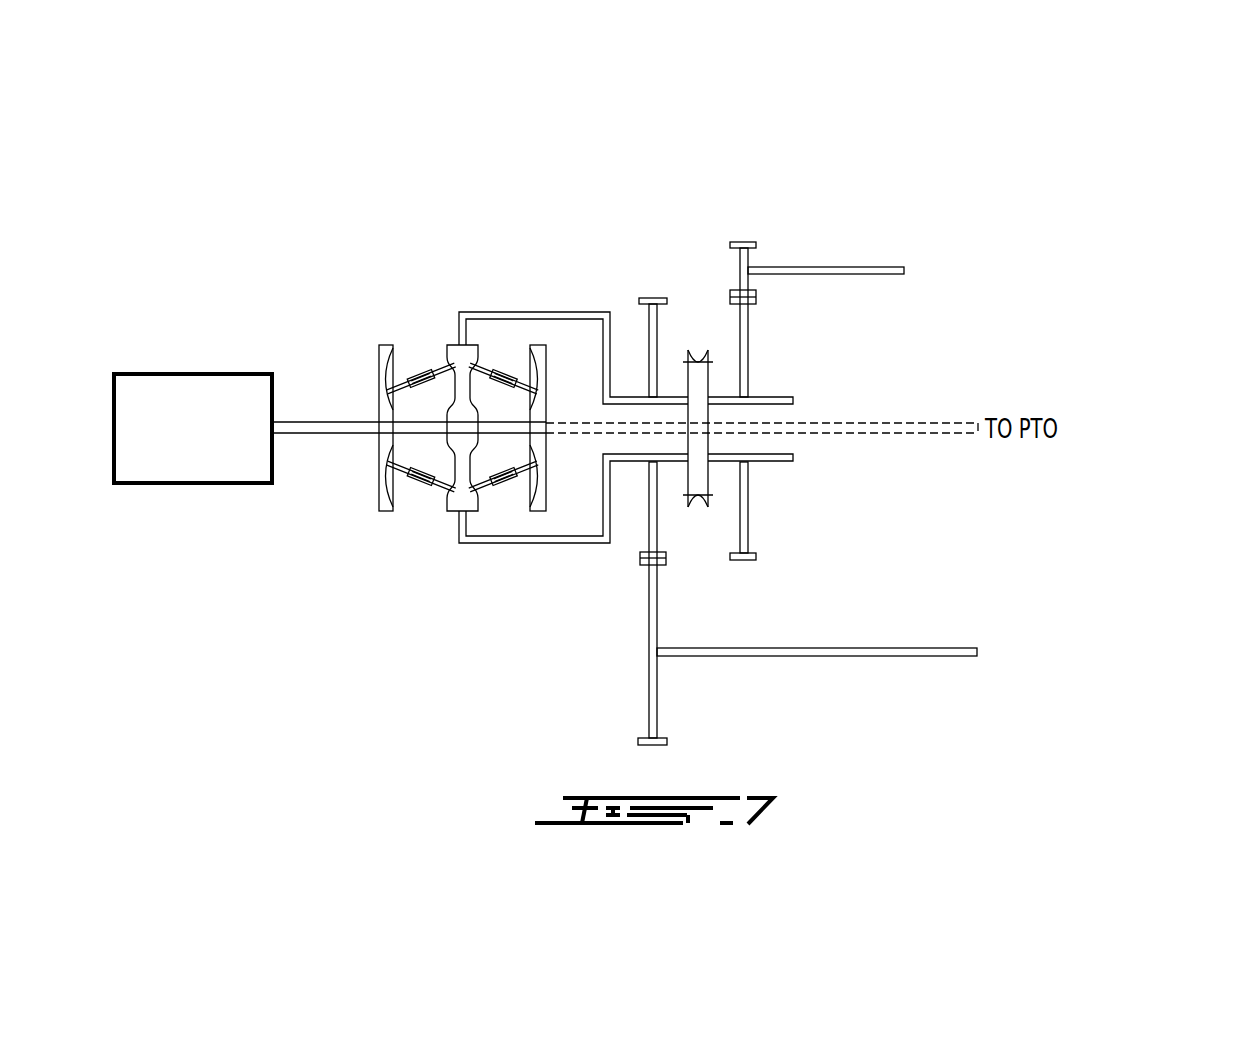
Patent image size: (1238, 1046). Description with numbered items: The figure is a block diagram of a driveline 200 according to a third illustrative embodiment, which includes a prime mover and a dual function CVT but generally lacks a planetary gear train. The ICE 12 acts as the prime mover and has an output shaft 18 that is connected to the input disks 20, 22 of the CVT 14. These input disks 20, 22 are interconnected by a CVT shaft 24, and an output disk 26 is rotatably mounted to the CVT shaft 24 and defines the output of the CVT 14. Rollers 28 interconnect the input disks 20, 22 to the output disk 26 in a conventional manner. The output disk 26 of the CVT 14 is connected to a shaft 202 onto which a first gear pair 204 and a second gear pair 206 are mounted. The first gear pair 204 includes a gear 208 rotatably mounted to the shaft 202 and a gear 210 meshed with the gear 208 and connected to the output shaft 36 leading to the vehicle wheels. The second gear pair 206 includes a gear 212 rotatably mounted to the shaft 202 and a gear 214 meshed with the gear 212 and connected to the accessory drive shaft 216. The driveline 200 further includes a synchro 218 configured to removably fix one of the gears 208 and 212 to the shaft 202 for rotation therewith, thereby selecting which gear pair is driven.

The ICE 12 is at (183, 484).
The CVT 14 is at (439, 454).
The output shaft 18 is at (310, 430).
The input disk 20 is at (391, 507).
The input disk 22 is at (538, 507).
The CVT shaft 24 is at (402, 431).
The output disk 26 is at (457, 507).
The rollers 28 is at (508, 380).
The output shaft 36 is at (847, 650).
The driveline 200 is at (749, 170).
The shaft 202 is at (627, 397).
The first gear pair 204 is at (632, 576).
The second gear pair 206 is at (776, 307).
The gear 208 is at (655, 337).
The gear 210 is at (654, 603).
The gear 212 is at (744, 375).
The gear 214 is at (746, 253).
The accessory drive shaft 216 is at (885, 268).
The synchro 218 is at (693, 503).